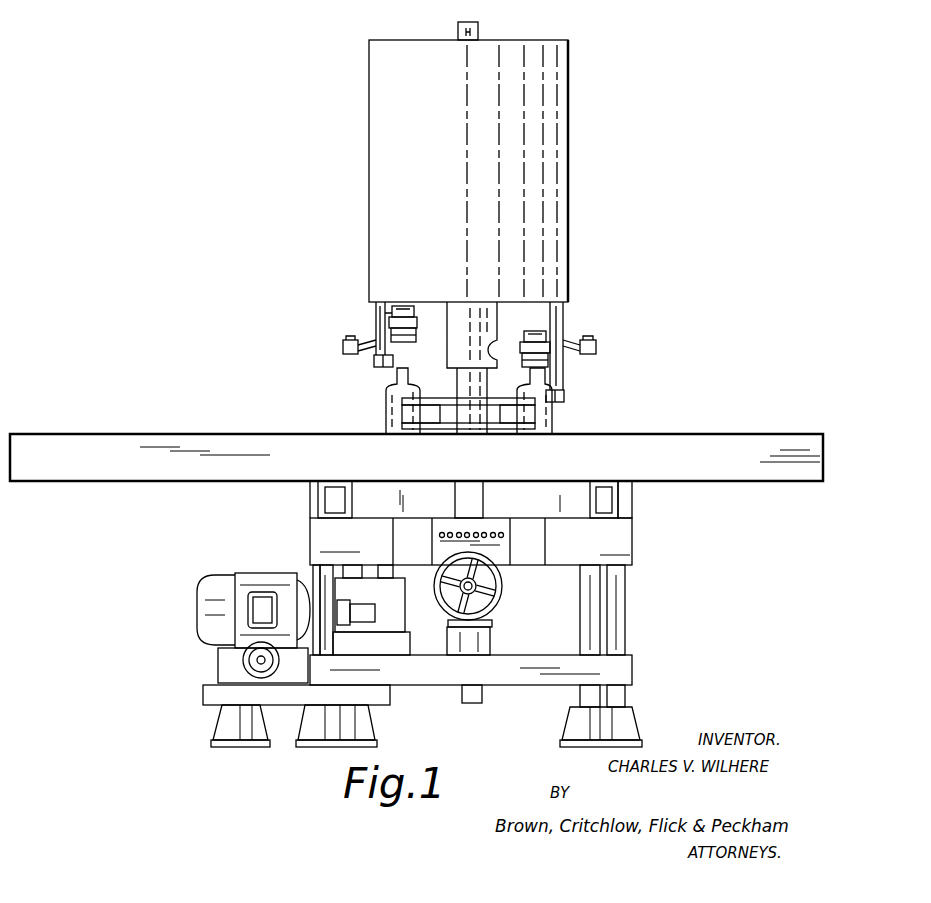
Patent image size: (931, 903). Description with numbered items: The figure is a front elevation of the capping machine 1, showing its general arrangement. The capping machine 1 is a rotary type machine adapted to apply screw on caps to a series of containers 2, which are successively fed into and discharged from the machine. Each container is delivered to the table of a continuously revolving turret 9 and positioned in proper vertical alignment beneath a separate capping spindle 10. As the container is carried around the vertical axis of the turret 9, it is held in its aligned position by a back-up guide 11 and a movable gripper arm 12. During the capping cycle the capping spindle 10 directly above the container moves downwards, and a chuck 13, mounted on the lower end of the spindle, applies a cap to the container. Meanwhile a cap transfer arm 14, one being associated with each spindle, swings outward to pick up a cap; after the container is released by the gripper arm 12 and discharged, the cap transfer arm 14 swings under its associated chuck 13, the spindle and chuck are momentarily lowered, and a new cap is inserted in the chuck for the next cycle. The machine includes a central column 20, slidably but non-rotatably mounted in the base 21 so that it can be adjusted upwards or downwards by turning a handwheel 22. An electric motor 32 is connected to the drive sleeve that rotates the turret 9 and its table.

The capping machine 1 is at (578, 201).
The containers 2 is at (386, 420).
The turret 9 is at (369, 222).
The capping spindle 10 is at (388, 314).
The back-up guide 11 is at (447, 396).
The gripper arm 12 is at (375, 366).
The chuck 13 is at (409, 344).
The cap transfer arm 14 is at (343, 347).
The central column 20 is at (478, 30).
The base 21 is at (633, 549).
The handwheel 22 is at (502, 597).
The electric motor 32 is at (258, 575).